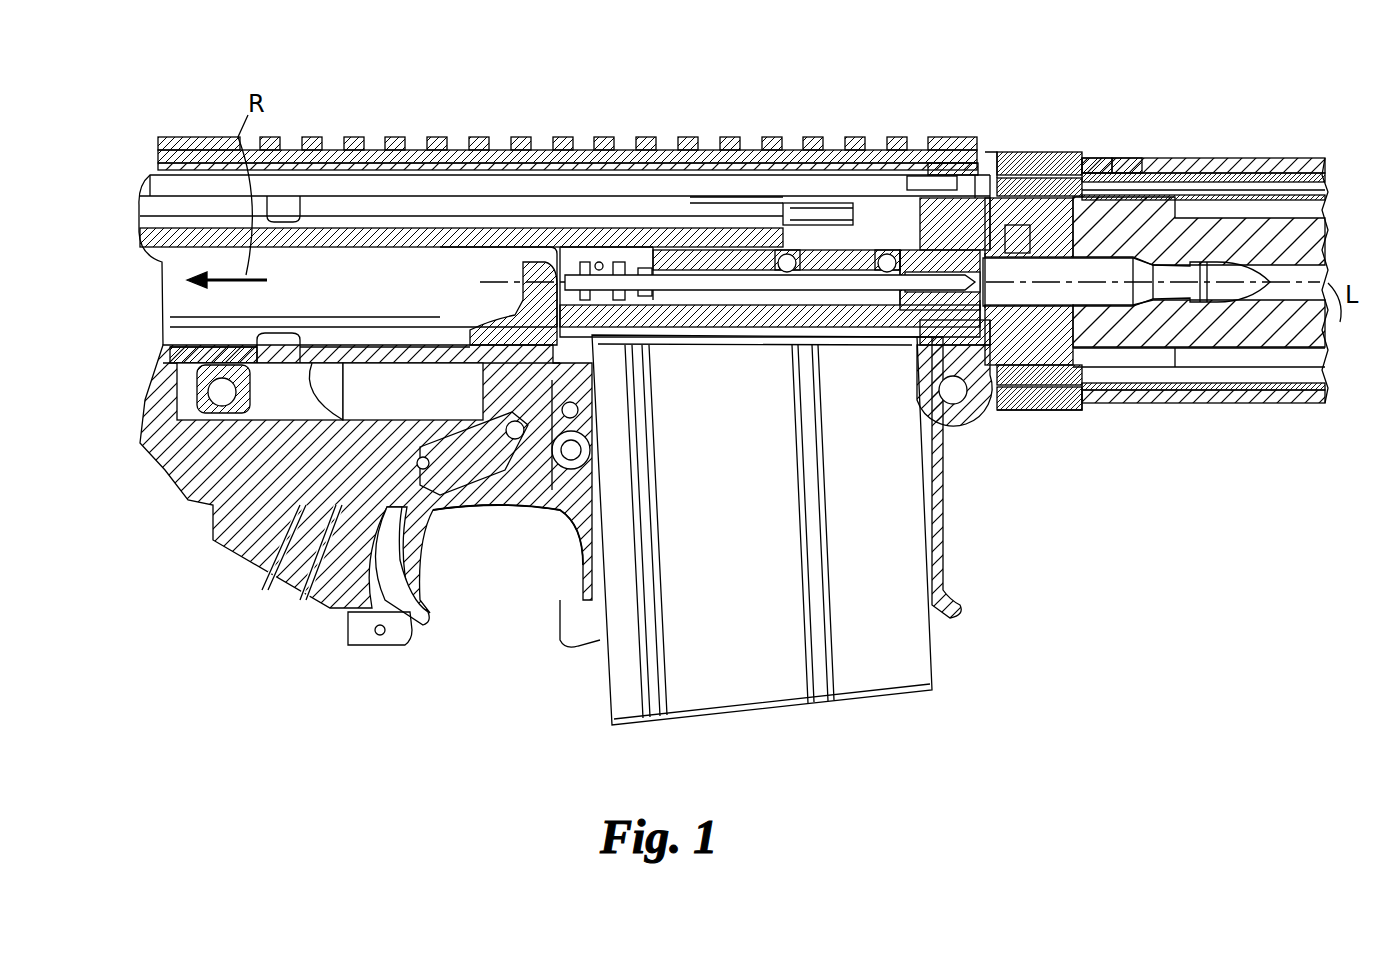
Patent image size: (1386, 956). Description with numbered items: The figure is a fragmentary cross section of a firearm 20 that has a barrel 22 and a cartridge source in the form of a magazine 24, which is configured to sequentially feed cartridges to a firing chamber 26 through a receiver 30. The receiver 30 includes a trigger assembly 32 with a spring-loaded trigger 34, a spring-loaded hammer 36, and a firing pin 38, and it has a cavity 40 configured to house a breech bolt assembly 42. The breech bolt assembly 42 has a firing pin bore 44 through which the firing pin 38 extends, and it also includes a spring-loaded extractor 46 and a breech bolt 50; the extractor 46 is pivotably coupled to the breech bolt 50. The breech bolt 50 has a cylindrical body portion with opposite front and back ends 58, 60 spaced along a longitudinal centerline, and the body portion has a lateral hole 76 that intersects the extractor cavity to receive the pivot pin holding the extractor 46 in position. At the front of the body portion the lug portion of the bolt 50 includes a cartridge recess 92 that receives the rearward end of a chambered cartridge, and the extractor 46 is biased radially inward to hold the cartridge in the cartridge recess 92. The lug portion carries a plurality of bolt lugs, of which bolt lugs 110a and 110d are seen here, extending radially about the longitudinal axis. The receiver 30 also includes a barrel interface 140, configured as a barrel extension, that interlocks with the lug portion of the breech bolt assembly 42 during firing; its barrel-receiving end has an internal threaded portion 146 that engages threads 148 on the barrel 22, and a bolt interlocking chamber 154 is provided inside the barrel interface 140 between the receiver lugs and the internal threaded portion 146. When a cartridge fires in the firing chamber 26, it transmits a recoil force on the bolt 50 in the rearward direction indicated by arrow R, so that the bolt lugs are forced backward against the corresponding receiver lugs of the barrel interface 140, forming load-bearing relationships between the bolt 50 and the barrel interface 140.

The firearm 20 is at (514, 110).
The barrel 22 is at (1283, 150).
The magazine 24 is at (718, 724).
The firing chamber 26 is at (1185, 158).
The receiver 30 is at (372, 137).
The trigger assembly 32 is at (533, 505).
The spring-loaded trigger 34 is at (432, 593).
The spring-loaded hammer 36 is at (158, 452).
The firing pin 38 is at (850, 205).
The cavity 40 is at (492, 250).
The breech bolt assembly 42 is at (750, 235).
The firing pin bore 44 is at (705, 300).
The spring-loaded extractor 46 is at (925, 240).
The breech bolt 50 is at (745, 292).
The front end 58 is at (1033, 240).
The back end 60 is at (683, 268).
The lateral hole 76 is at (898, 218).
The cartridge recess 92 is at (1080, 385).
The bolt lug 110a is at (998, 152).
The bolt lug 110d is at (1040, 412).
The barrel interface 140 is at (1098, 158).
The internal threaded portion 146 is at (1142, 168).
The threads 148 is at (1135, 165).
The bolt interlocking chamber 154 is at (1017, 237).